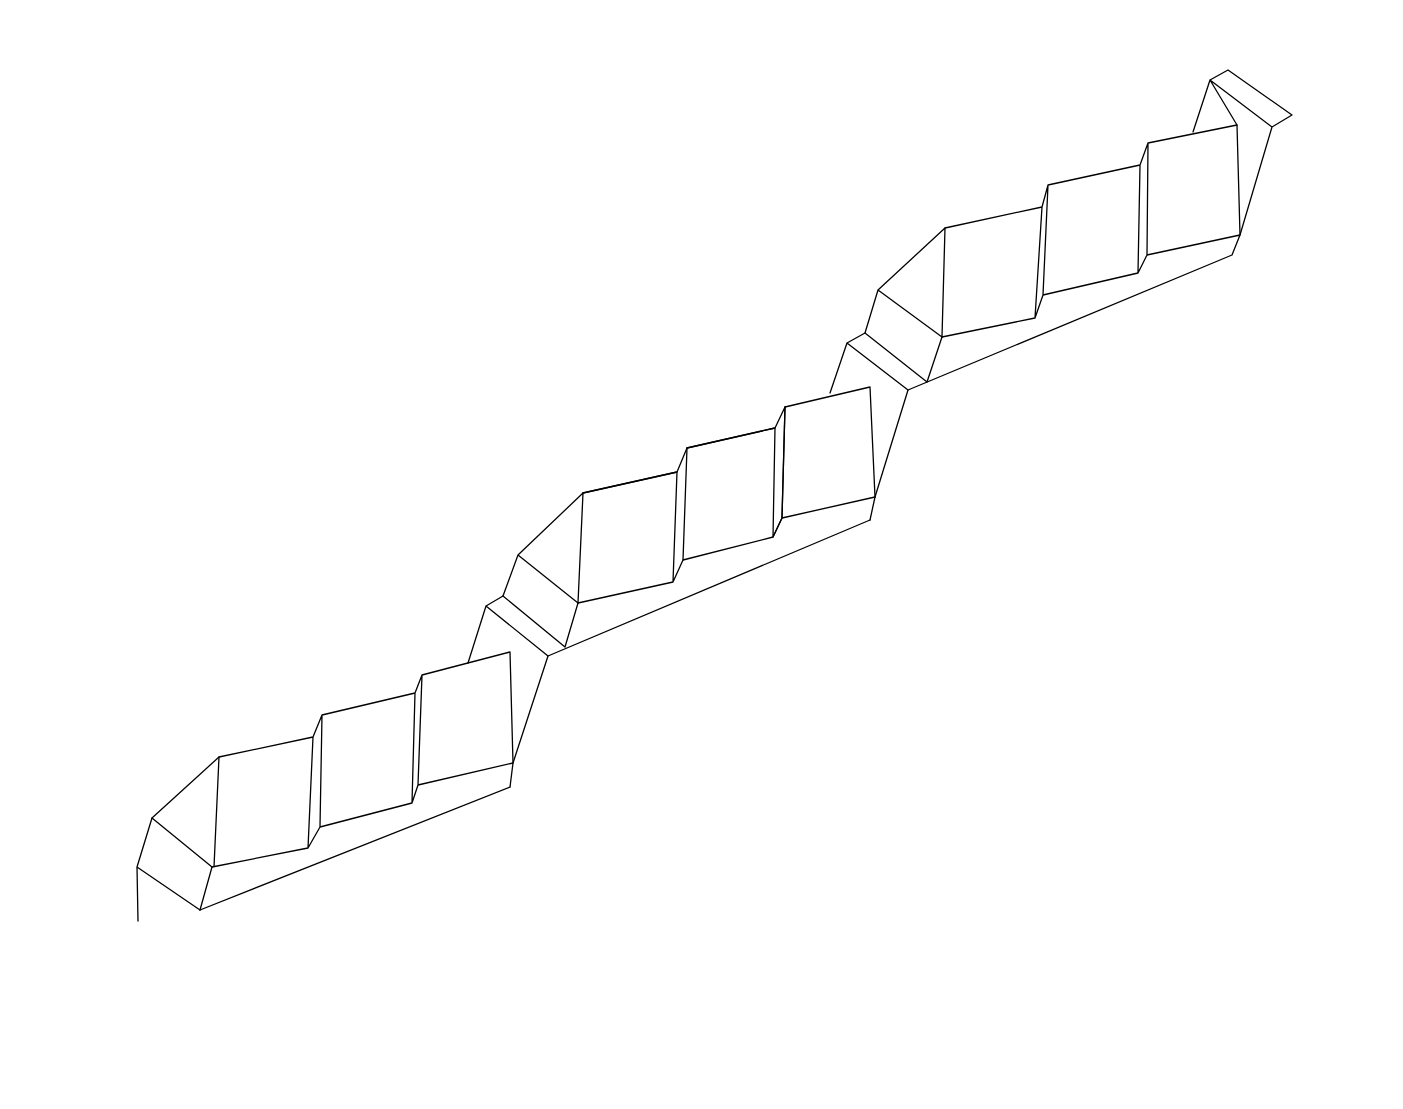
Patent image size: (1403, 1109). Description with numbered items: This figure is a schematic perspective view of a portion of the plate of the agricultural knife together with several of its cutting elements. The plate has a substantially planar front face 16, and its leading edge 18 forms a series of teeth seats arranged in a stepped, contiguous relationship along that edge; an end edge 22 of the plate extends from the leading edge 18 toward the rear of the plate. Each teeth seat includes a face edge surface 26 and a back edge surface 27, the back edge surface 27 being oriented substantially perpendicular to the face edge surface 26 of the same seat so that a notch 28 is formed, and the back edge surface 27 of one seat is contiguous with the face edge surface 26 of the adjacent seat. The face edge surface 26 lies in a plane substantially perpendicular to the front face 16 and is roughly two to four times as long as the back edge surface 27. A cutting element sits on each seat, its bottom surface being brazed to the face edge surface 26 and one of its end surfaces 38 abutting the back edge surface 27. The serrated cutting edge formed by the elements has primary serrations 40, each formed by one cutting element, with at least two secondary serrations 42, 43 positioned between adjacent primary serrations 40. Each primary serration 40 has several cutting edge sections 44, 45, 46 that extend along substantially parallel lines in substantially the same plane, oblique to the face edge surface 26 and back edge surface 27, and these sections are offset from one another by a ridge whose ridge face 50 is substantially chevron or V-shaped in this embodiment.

The front face 16 is at (1090, 386).
The leading edge 18 is at (283, 880).
The end edge 22 is at (163, 903).
The face edge surface 26 is at (640, 623).
The back edge surface 27 is at (488, 629).
The notch 28 is at (872, 520).
The end surface 38 is at (163, 853).
The primary serration 40 is at (513, 510).
The secondary serration 42 is at (652, 450).
The secondary serration 43 is at (765, 417).
The cutting edge section 44 is at (603, 493).
The cutting edge section 45 is at (723, 438).
The cutting edge section 46 is at (818, 397).
The ridge face 50 is at (778, 494).